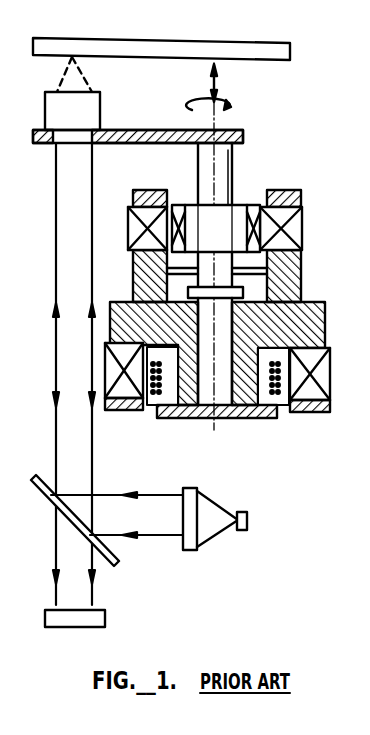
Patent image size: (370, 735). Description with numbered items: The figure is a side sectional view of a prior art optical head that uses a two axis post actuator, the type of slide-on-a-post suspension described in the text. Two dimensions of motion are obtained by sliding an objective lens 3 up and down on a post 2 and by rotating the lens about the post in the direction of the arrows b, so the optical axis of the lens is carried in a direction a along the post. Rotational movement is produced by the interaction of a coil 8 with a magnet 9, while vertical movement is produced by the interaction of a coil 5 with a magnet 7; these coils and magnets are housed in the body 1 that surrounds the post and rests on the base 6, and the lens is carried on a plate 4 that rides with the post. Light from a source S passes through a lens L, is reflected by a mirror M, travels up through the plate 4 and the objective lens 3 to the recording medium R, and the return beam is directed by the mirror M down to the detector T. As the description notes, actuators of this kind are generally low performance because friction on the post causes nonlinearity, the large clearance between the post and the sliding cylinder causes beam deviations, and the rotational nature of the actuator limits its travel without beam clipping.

The recording medium / film plate R is at (170, 41).
The objective lens 3 is at (90, 104).
The support plate 4 is at (145, 130).
The axis of rotation a is at (218, 80).
The arrows b is at (236, 110).
The post 2 is at (234, 162).
The coil 8 is at (248, 212).
The magnet 9 is at (303, 237).
The housing 1 is at (327, 330).
The magnet 7 is at (331, 377).
The coil 5 is at (281, 398).
The base plate 6 is at (243, 420).
The mirror M is at (78, 531).
The lens L is at (178, 552).
The light source S is at (245, 532).
The detector / target T is at (85, 628).